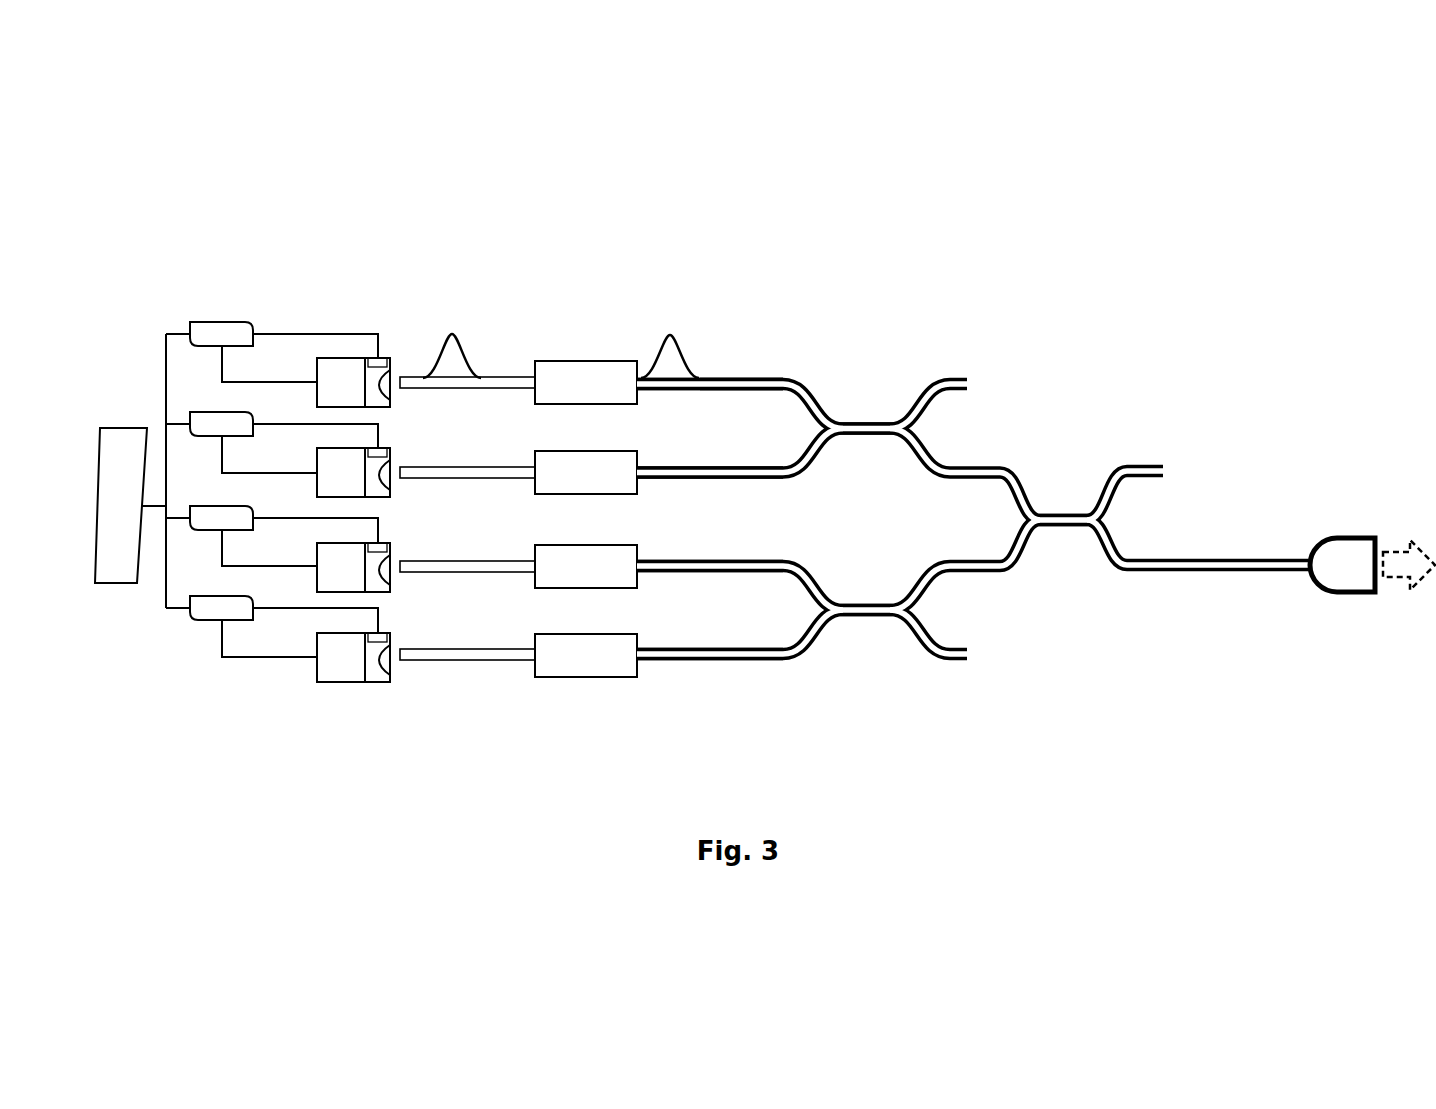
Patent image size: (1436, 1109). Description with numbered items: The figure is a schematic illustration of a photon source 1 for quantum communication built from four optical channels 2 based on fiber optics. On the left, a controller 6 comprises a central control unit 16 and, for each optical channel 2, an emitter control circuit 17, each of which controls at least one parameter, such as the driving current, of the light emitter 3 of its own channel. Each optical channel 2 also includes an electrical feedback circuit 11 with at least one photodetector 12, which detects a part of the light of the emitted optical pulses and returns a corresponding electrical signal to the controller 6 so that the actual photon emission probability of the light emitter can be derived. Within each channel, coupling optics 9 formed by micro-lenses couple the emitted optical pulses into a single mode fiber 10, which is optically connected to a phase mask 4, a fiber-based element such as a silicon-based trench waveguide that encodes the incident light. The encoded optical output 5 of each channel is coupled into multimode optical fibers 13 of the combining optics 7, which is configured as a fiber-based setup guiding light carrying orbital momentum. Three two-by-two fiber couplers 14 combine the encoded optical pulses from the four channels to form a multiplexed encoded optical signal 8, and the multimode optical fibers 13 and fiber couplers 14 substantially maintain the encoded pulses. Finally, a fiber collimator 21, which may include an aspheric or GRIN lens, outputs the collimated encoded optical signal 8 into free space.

The photon source 1 is at (1115, 308).
The optical channel 2 is at (701, 325).
The light emitter 3 is at (338, 358).
The phase mask 4 is at (587, 361).
The encoded optical output 5 is at (759, 373).
The controller 6 is at (146, 304).
The combining optics 7 is at (975, 327).
The multiplexed encoded optical signal 8 is at (1400, 548).
The coupling optics 9 is at (389, 372).
The single mode fiber 10 is at (503, 376).
The electrical feedback circuit 11 is at (285, 333).
The photodetector 12 is at (385, 358).
The multimode optical fibers 13 is at (717, 372).
The fiber coupler 14 is at (870, 415).
The central control unit 16 is at (105, 586).
The emitter control circuit 17 is at (216, 322).
The fiber collimator 21 is at (1340, 538).